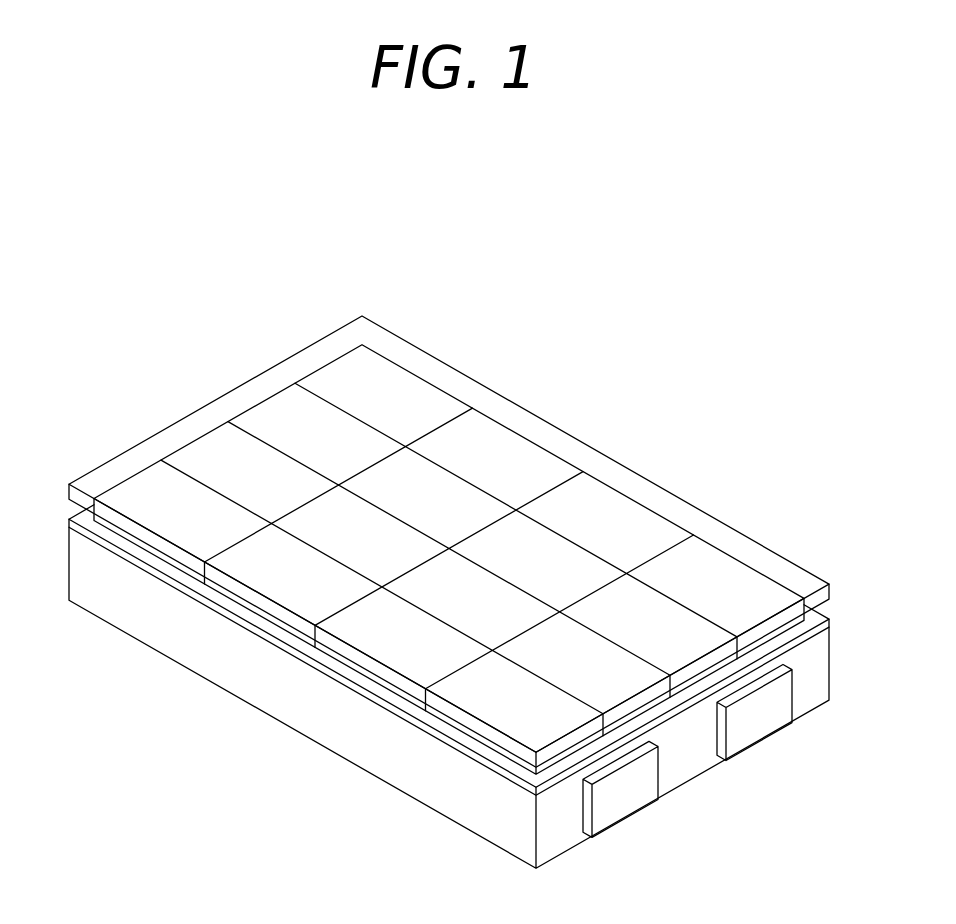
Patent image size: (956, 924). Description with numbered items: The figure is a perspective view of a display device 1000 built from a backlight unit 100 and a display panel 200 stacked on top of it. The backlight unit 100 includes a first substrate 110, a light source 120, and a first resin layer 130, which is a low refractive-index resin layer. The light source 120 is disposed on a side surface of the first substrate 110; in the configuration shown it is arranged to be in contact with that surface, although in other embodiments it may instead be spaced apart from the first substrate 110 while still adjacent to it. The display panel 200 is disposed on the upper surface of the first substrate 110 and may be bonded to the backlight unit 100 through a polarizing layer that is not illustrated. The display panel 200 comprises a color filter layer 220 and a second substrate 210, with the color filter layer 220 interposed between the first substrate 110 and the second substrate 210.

The display device 1000 is at (92, 288).
The backlight unit 100 is at (678, 883).
The first substrate 110 is at (557, 823).
The light source 120 is at (640, 795).
The first resin layer 130 is at (670, 707).
The display panel 200 is at (778, 460).
The second substrate 210 is at (640, 475).
The color filter layer 220 is at (680, 673).